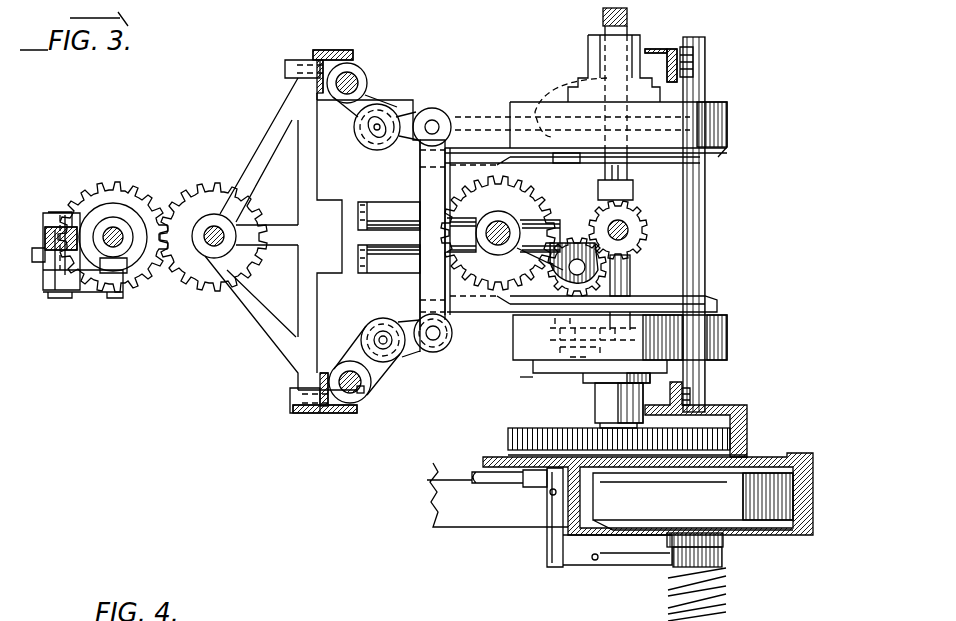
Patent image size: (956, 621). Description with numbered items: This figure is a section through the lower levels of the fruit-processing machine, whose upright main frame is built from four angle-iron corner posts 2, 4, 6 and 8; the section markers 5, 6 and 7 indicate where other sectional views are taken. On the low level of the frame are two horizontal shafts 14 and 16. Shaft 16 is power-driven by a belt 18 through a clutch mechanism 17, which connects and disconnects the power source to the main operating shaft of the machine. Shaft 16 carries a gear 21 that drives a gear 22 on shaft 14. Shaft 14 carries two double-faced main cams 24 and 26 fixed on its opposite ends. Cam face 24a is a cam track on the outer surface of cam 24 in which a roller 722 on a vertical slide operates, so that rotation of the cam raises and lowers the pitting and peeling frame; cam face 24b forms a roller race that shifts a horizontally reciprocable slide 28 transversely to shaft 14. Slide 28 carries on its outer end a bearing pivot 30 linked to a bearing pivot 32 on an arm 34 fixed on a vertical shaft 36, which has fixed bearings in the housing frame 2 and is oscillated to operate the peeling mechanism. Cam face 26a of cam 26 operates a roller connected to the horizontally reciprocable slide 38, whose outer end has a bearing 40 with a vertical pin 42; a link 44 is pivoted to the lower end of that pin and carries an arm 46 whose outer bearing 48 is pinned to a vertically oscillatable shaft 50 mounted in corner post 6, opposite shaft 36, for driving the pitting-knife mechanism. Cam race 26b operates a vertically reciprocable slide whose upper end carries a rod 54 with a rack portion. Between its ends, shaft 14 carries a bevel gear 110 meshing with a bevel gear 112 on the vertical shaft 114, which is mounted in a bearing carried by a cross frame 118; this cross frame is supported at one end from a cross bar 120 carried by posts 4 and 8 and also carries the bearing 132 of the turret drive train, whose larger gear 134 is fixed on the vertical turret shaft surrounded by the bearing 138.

The corner post 2 is at (340, 415).
The corner post 4 is at (617, 398).
The section line 5 is at (258, 402).
The corner post 6 is at (288, 50).
The section line 7 is at (100, 313).
The corner post 8 is at (667, 48).
The horizontal shaft 14 is at (627, 270).
The horizontal shaft 16 is at (693, 175).
The clutch mechanism 17 is at (547, 540).
The belt 18 is at (443, 480).
The gear 21 is at (717, 427).
The gear 22 is at (510, 437).
The main cam 24 is at (513, 353).
The cam face 24a is at (520, 377).
The cam face 24b is at (727, 322).
The main cam 26 is at (513, 105).
The cam face 26a is at (548, 120).
The cam race 26b is at (598, 63).
The horizontally reciprocable slide 28 is at (660, 297).
The bearing pivot 30 is at (430, 331).
The bearing pivot 32 is at (383, 347).
The arm 34 is at (362, 358).
The vertical shaft 36 is at (348, 392).
The horizontally reciprocable slide 38 is at (463, 150).
The bearing 40 is at (437, 110).
The vertical pin 42 is at (437, 127).
The link 44 is at (403, 113).
The arm 46 is at (382, 106).
The bearing 48 is at (363, 80).
The vertically oscillatable shaft 50 is at (345, 95).
The rod 54 is at (627, 15).
The bevel gear 110 is at (633, 200).
The bevel gear 112 is at (650, 230).
The vertical shaft 114 is at (593, 222).
The cross frame 118 is at (468, 215).
The cross bar 120 is at (388, 182).
The bearing 132 is at (545, 268).
The gear 134 is at (415, 280).
The bearing 138 is at (510, 233).
The roller 722 is at (577, 357).